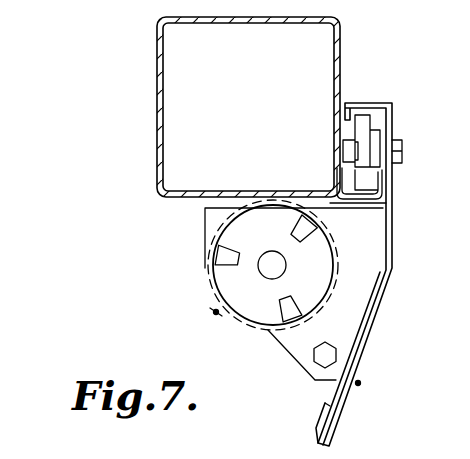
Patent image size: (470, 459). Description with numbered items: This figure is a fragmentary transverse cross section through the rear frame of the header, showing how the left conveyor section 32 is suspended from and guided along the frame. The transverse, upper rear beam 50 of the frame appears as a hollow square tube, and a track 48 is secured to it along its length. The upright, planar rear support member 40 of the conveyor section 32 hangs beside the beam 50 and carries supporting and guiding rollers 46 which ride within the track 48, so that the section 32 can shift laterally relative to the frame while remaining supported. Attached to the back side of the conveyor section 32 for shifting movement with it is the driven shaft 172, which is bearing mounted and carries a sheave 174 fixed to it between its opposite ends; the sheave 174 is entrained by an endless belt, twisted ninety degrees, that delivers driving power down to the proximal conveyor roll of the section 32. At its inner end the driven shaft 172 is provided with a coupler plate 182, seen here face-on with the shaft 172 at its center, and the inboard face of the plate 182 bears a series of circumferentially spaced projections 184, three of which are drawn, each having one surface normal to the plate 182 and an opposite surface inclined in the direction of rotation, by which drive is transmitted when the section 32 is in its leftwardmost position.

The left conveyor section 32 is at (352, 382).
The rear support member 40 is at (378, 305).
The supporting and guiding rollers 46 is at (363, 122).
The track 48 is at (372, 198).
The upper rear beam 50 is at (157, 93).
The driven shaft 172 is at (266, 259).
The sheave 174 is at (209, 268).
The coupler plate 182 is at (215, 313).
The projections 184 is at (318, 224).